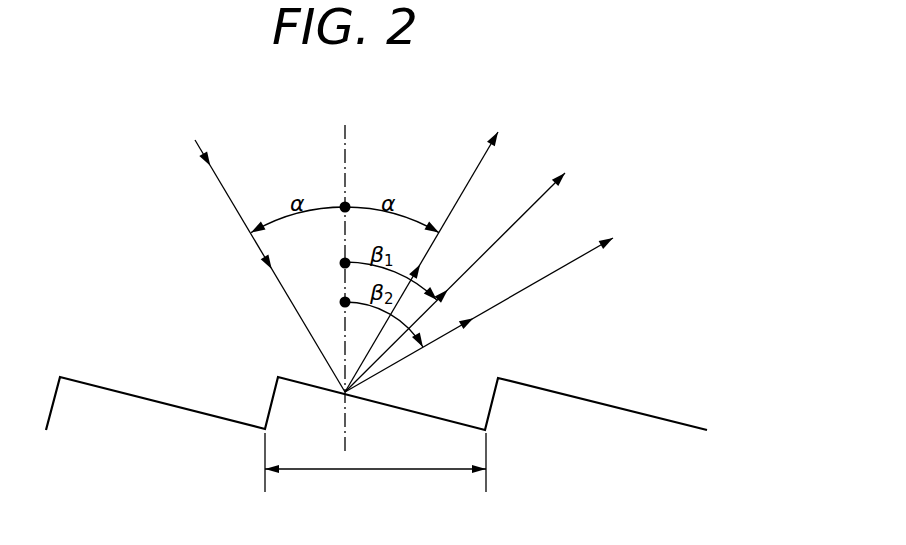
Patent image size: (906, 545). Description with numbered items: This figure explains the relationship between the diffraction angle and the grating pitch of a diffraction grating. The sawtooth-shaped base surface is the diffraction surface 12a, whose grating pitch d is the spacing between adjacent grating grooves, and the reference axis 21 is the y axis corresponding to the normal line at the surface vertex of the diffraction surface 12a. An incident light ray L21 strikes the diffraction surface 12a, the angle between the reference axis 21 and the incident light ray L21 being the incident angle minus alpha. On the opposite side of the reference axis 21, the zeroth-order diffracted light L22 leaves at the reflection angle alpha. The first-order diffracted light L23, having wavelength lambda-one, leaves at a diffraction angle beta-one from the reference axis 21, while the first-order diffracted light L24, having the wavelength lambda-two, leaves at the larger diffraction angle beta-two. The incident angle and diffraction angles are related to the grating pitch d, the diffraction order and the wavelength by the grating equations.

The diffraction surface 12a is at (667, 418).
The reference axis 21 is at (345, 145).
The incident light ray L21 is at (262, 255).
The zeroth-order diffracted light L22 is at (433, 249).
The first-order diffracted light L23 is at (468, 271).
The first-order diffracted light L24 is at (503, 307).
The grating pitch d is at (375, 468).